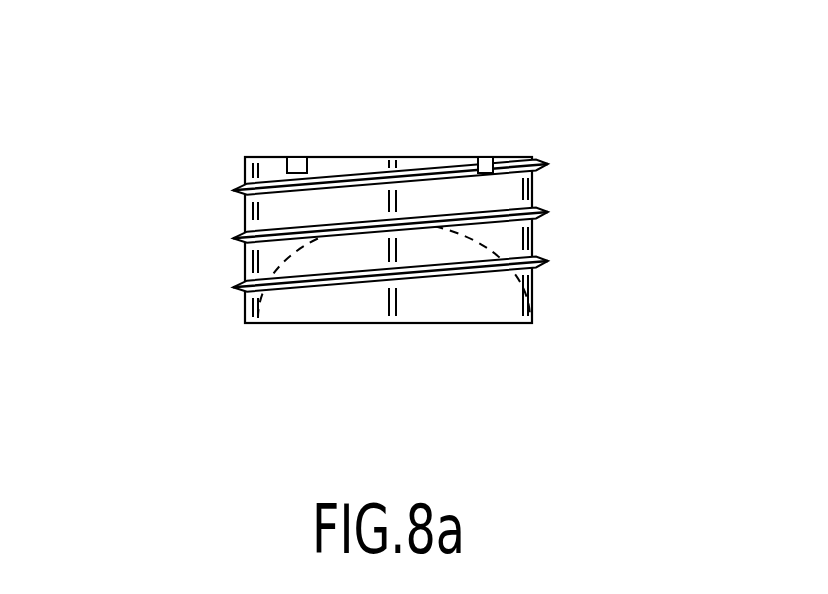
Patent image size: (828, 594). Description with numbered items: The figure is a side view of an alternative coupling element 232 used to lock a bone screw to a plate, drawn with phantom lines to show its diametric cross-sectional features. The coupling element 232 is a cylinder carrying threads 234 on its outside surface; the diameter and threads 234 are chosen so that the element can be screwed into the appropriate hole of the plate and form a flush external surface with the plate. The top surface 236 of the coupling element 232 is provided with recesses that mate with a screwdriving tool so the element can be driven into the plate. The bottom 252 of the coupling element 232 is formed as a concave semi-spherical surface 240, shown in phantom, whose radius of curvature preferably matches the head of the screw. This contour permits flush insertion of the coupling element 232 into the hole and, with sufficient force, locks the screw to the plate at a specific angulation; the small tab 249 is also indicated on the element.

The coupling element 232 is at (563, 197).
The threads 234 is at (238, 286).
The top surface 236 is at (374, 154).
The concave semi-spherical surface 240 is at (305, 248).
The tab 249 is at (292, 156).
The bottom 252 is at (493, 329).